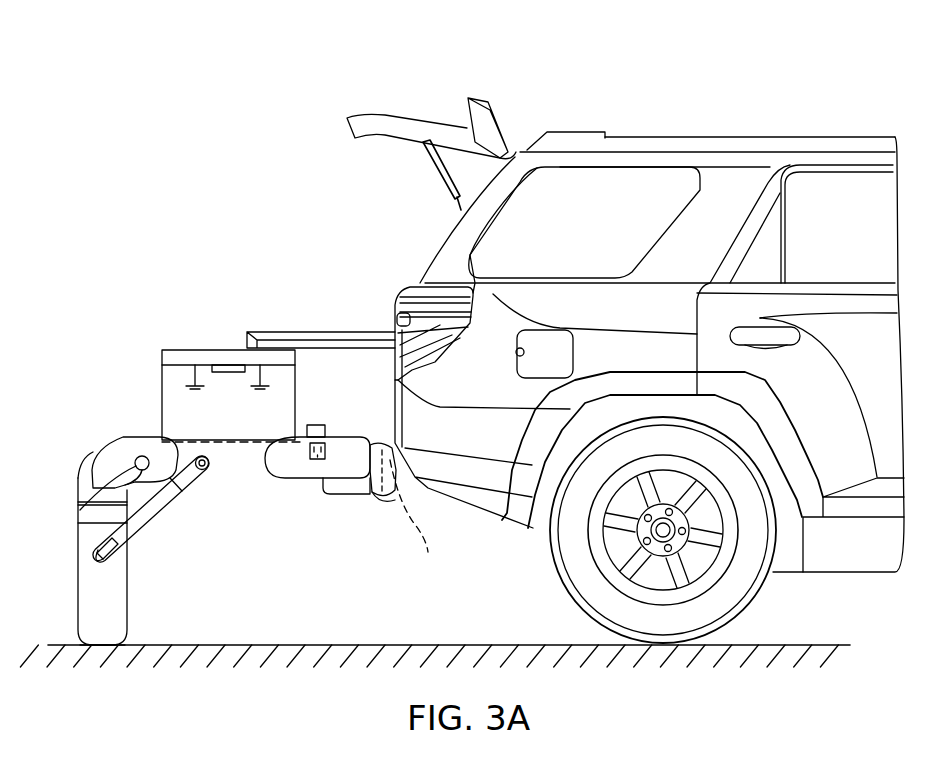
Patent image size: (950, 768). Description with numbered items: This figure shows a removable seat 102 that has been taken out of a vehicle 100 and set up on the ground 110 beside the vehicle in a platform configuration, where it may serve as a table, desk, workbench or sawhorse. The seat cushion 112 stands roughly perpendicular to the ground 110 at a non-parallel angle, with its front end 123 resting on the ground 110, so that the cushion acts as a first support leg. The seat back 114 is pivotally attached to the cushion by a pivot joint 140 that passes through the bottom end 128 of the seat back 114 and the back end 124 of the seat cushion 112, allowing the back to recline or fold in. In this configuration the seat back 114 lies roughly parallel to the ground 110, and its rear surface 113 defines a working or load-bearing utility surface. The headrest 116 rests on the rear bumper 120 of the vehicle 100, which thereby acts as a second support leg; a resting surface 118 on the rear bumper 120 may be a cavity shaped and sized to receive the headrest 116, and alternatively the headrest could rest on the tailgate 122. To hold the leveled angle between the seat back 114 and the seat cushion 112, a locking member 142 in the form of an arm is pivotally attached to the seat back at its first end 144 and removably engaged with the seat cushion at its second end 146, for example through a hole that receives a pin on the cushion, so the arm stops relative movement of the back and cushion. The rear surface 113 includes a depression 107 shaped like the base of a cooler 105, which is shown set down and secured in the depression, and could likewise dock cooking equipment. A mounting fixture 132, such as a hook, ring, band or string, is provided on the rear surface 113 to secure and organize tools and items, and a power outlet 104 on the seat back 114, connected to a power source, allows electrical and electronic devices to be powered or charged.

The vehicle 100 is at (577, 92).
The removable seat 102 is at (80, 436).
The power outlet 104 is at (328, 455).
The cooler 105 is at (162, 383).
The depression 107 is at (152, 437).
The ground 110 is at (208, 648).
The seat cushion 112 is at (120, 623).
The rear surface 113 is at (325, 425).
The seat back 114 is at (254, 478).
The headrest 116 is at (378, 445).
The resting surface 118 is at (416, 524).
The rear bumper 120 is at (374, 498).
The tailgate 122 is at (296, 332).
The front end 123 is at (80, 643).
The back end 124 is at (82, 470).
The bottom end 128 is at (102, 447).
The mounting fixture 132 is at (270, 442).
The pivot joint 140 is at (80, 508).
The locking member 142 is at (182, 490).
The first end 144 is at (204, 473).
The second end 146 is at (100, 550).